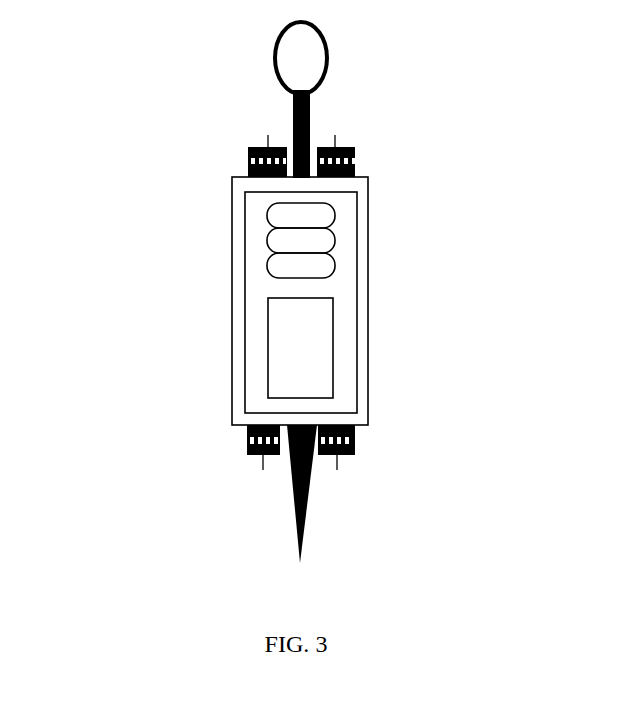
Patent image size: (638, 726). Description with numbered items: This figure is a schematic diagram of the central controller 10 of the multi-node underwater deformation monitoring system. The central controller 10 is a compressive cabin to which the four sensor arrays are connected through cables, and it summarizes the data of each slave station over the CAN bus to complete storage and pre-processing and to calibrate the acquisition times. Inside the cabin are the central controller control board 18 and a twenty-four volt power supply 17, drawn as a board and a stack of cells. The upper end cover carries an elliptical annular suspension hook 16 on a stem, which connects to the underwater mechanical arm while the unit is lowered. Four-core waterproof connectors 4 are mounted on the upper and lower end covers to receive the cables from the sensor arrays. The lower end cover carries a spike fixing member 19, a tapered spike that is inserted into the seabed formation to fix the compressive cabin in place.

The four-core waterproof connector 4 is at (206, 266).
The central controller 10 is at (212, 301).
The annular suspension hook 16 is at (404, 72).
The power supply 17 is at (400, 254).
The central controller control board 18 is at (400, 364).
The spike fixing member 19 is at (187, 469).